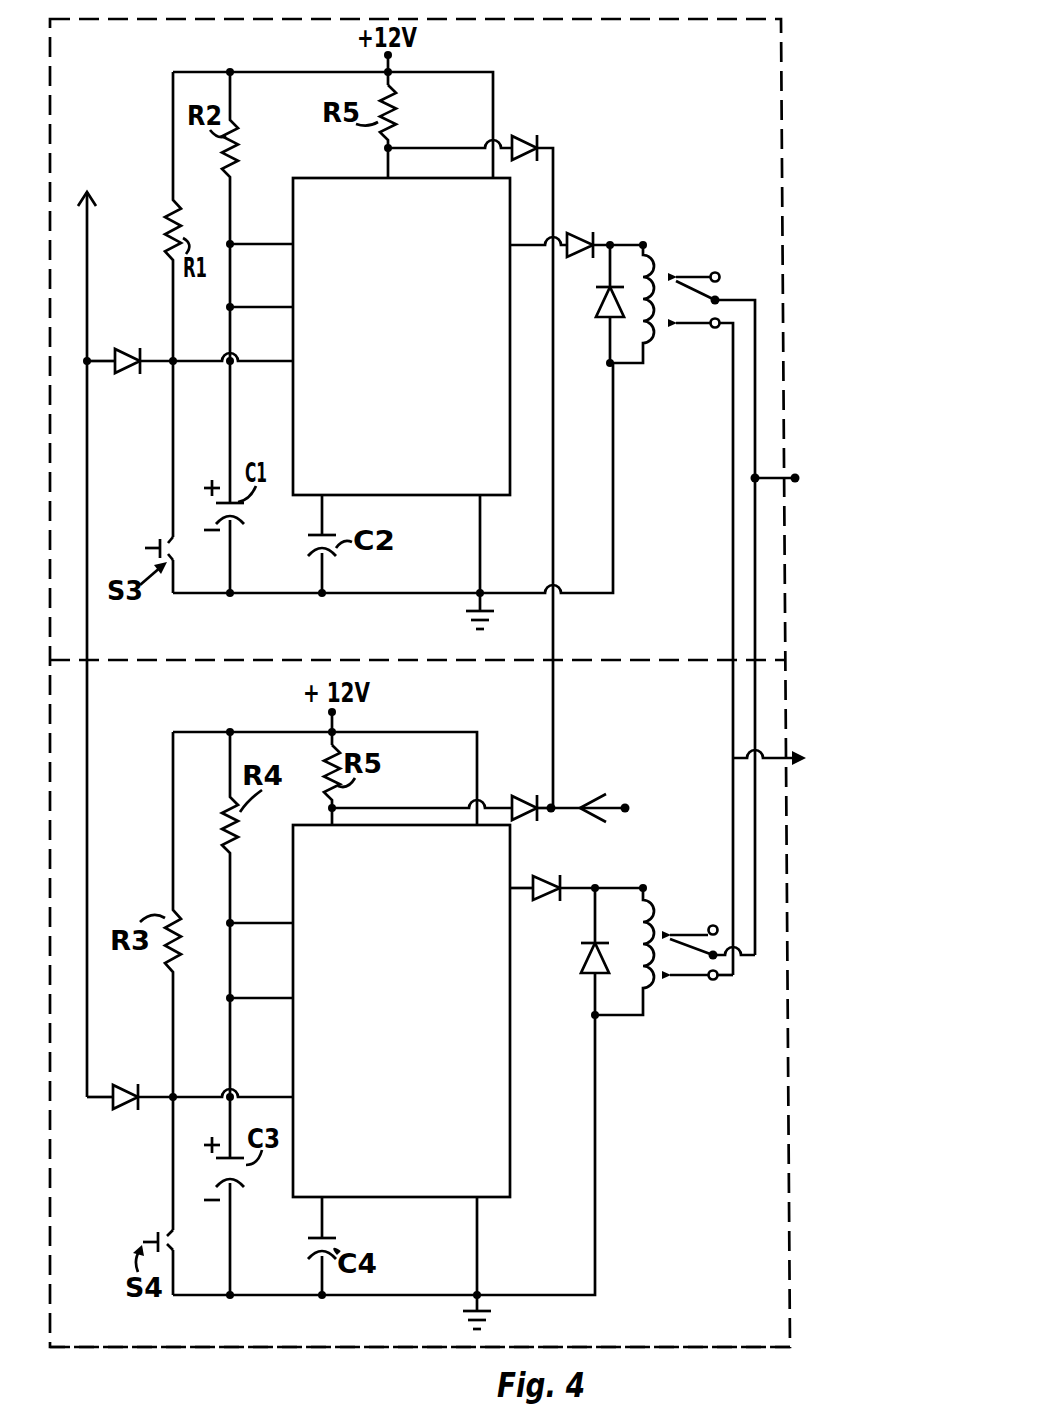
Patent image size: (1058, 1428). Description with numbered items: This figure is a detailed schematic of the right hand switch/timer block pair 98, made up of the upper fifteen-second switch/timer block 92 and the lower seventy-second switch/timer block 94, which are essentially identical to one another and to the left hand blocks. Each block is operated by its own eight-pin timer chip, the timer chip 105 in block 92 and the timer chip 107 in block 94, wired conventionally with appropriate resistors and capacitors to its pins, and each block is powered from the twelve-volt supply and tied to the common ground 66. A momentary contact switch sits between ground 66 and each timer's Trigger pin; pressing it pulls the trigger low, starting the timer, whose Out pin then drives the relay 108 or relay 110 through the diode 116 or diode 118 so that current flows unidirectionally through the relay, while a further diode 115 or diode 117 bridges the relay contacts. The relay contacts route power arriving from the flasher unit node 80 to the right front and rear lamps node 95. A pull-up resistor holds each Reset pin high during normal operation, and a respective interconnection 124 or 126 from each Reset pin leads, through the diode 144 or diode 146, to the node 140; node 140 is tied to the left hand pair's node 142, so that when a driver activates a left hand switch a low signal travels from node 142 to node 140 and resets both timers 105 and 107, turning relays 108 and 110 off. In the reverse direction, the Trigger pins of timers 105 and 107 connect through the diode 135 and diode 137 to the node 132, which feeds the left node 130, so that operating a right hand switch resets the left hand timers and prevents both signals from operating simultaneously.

The right hand switch/timer block pair 98 is at (790, 98).
The switch/timer block 92 is at (740, 152).
The switch/timer block 94 is at (745, 1085).
The 555 timer chip 105 is at (417, 447).
The 555 timer chip 107 is at (396, 1084).
The relay 108 is at (656, 260).
The relay 110 is at (658, 995).
The diode 115 is at (600, 298).
The diode 116 is at (592, 233).
The diode 117 is at (580, 968).
The diode 118 is at (553, 898).
The interconnection 124 is at (540, 146).
The interconnection 126 is at (553, 818).
The node 130 is at (113, 118).
The node 132 is at (91, 350).
The diode 135 is at (136, 373).
The diode 137 is at (131, 1108).
The node 140 is at (548, 801).
The node 142 is at (634, 810).
The diode 144 is at (514, 138).
The diode 146 is at (511, 796).
The common ground 66 is at (466, 622).
The flasher unit node 80 is at (833, 535).
The right front and rear lamps node 95 is at (822, 788).